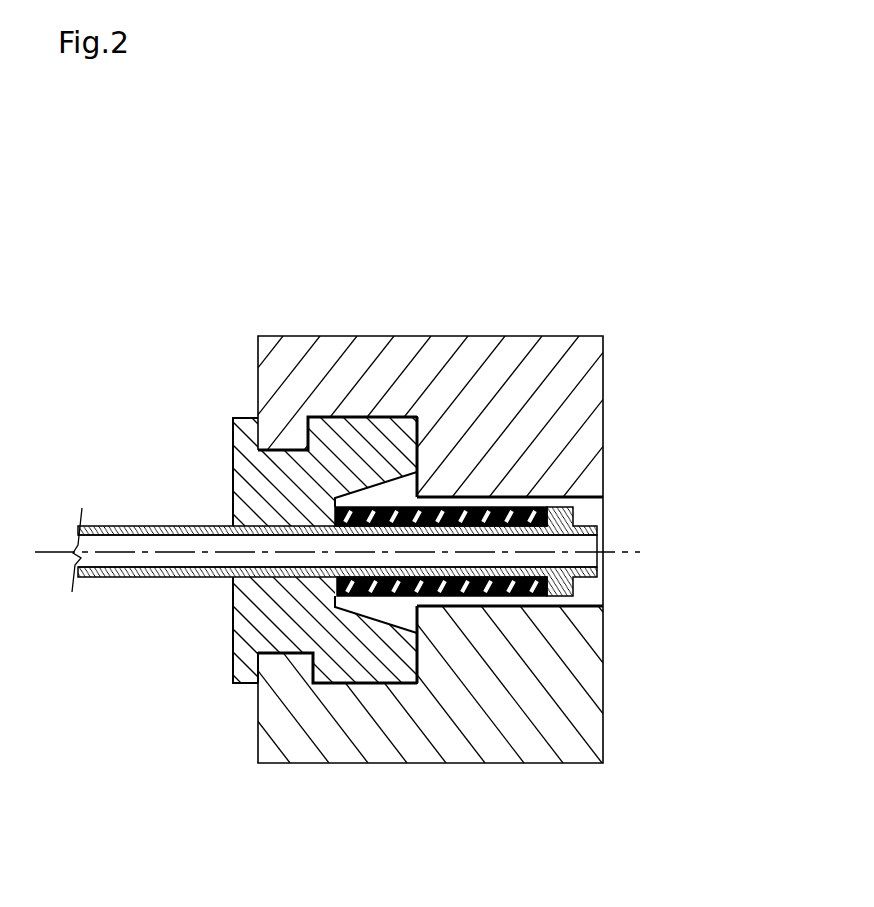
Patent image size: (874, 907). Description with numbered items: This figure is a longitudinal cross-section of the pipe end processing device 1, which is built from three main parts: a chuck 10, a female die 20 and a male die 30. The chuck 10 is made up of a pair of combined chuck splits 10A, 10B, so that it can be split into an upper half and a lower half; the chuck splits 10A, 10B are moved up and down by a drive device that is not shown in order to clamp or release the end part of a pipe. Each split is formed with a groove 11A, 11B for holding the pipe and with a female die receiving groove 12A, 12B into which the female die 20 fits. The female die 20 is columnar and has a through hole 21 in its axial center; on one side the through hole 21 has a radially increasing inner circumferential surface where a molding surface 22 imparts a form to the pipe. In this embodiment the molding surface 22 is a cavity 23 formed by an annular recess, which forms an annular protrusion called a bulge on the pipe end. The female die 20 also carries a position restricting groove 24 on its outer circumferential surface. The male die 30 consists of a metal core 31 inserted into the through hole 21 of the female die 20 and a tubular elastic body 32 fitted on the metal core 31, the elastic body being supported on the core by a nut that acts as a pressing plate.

The pipe end processing device 1 is at (237, 320).
The chuck 10 is at (437, 528).
The chuck split 10A is at (512, 348).
The chuck split 10B is at (532, 717).
The groove 11A is at (603, 497).
The groove 11B is at (603, 607).
The female die receiving groove 12A is at (341, 417).
The female die receiving groove 12B is at (347, 684).
The female die 20 is at (228, 460).
The through hole 21 is at (233, 517).
The molding surface 22 is at (393, 478).
The cavity 23 is at (397, 613).
The position restricting groove 24 is at (285, 653).
The male die 30 is at (603, 538).
The metal core 31 is at (208, 577).
The tubular elastic body 32 is at (525, 507).